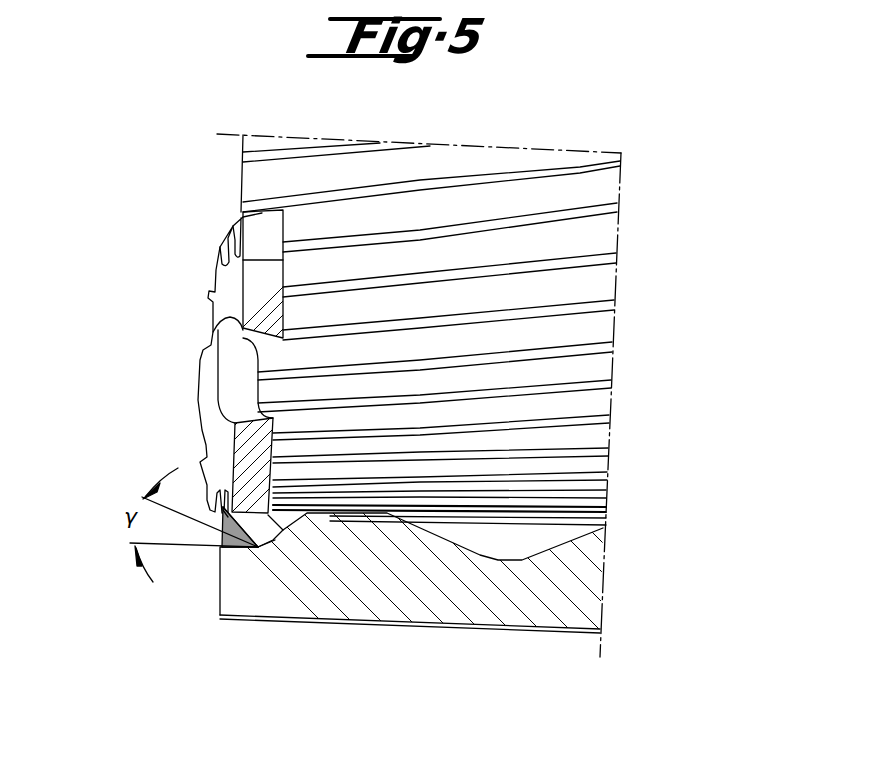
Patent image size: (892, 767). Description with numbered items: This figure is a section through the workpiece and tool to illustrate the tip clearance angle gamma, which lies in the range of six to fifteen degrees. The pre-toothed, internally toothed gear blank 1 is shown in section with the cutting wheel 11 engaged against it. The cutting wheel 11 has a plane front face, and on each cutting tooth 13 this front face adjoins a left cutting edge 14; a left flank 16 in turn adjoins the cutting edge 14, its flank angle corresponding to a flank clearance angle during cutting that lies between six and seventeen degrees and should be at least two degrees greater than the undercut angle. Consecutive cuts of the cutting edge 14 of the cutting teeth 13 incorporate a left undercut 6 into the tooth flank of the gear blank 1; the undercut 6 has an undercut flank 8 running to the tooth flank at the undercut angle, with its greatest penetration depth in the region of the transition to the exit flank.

The gear blank 1 is at (632, 238).
The cutting wheel 11 is at (228, 291).
The left flank 16 is at (262, 548).
The cutting tooth 13 is at (224, 548).
The left undercut 6 is at (246, 548).
The undercut flank 8 is at (260, 548).
The left cutting edge 14 is at (262, 548).